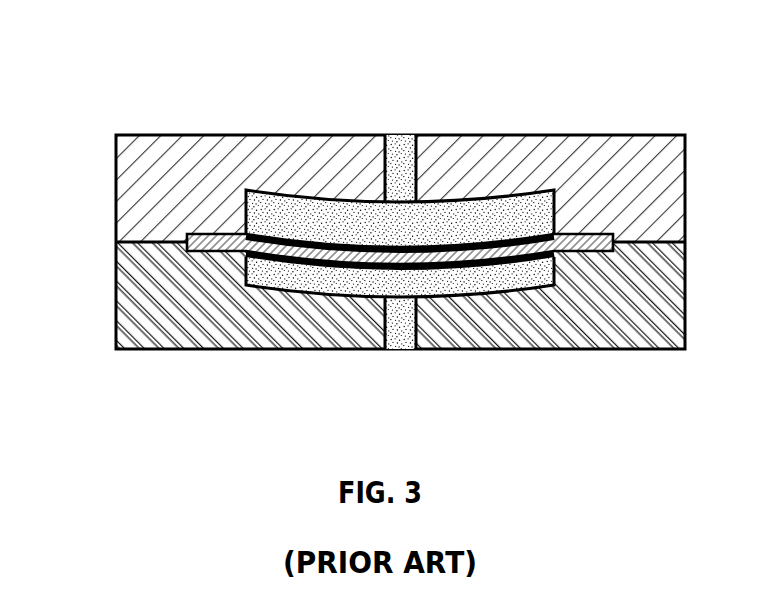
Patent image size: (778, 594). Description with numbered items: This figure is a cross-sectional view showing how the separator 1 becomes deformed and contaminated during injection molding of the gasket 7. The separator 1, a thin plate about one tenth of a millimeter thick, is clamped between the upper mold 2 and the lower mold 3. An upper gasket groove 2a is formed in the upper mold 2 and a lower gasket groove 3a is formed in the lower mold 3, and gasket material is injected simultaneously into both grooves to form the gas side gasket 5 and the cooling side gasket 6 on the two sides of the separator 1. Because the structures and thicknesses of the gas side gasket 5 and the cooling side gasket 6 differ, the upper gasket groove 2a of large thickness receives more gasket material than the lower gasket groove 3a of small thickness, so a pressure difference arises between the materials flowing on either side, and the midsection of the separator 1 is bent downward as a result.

The separator 1 is at (607, 233).
The upper mold 2 is at (270, 160).
The upper gasket groove 2a is at (494, 193).
The lower mold 3 is at (203, 318).
The lower gasket groove 3a is at (506, 276).
The gas side gasket 5 is at (246, 256).
The cooling side gasket 6 is at (246, 212).
The gasket 7 is at (280, 236).